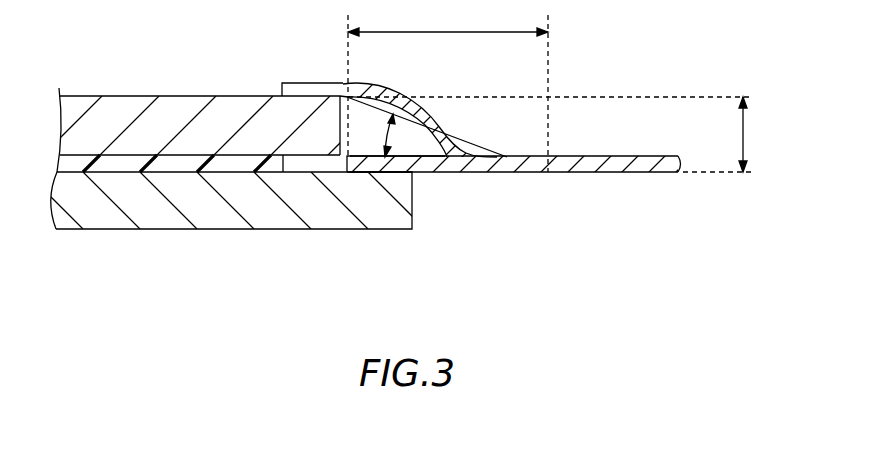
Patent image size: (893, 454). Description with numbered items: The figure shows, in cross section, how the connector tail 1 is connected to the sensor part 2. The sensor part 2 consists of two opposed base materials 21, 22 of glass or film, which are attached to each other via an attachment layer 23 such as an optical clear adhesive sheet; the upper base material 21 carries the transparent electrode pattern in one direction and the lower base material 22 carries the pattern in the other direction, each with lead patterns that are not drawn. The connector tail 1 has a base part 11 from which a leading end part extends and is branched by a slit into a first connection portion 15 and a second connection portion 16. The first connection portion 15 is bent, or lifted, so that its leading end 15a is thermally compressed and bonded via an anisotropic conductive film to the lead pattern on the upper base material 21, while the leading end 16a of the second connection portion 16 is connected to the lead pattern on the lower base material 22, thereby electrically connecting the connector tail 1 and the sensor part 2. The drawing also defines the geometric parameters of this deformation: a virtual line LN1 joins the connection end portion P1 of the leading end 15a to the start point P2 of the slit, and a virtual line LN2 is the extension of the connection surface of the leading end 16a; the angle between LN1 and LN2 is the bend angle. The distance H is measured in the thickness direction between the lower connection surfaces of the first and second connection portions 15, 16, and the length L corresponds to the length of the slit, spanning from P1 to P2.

The connector tail 1 is at (398, 140).
The sensor part 2 is at (225, 143).
The base part 11 is at (484, 158).
The first connection portion 15 is at (393, 86).
The leading end of first connection portion 15a is at (307, 82).
The second connection portion 16 is at (524, 211).
The leading end of second connection portion 16a is at (401, 173).
The base material 21 is at (190, 108).
The base material 22 is at (158, 220).
The attachment layer 23 is at (128, 160).
The connection end portion P1 is at (340, 82).
The start point of the slit P2 is at (548, 173).
The length of the slit L is at (448, 20).
The distance between connection portions H is at (559, 134).
The virtual line LN1 is at (478, 153).
The virtual line LN2 is at (440, 173).